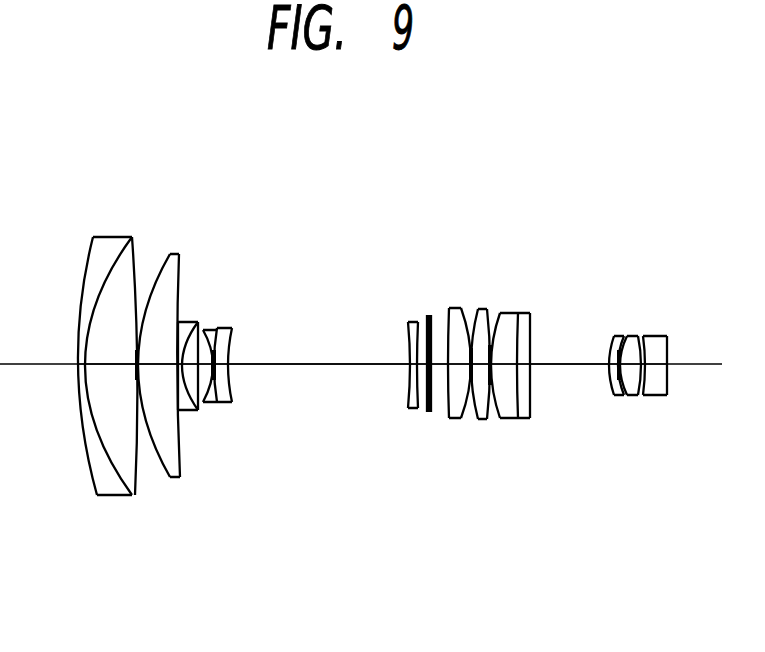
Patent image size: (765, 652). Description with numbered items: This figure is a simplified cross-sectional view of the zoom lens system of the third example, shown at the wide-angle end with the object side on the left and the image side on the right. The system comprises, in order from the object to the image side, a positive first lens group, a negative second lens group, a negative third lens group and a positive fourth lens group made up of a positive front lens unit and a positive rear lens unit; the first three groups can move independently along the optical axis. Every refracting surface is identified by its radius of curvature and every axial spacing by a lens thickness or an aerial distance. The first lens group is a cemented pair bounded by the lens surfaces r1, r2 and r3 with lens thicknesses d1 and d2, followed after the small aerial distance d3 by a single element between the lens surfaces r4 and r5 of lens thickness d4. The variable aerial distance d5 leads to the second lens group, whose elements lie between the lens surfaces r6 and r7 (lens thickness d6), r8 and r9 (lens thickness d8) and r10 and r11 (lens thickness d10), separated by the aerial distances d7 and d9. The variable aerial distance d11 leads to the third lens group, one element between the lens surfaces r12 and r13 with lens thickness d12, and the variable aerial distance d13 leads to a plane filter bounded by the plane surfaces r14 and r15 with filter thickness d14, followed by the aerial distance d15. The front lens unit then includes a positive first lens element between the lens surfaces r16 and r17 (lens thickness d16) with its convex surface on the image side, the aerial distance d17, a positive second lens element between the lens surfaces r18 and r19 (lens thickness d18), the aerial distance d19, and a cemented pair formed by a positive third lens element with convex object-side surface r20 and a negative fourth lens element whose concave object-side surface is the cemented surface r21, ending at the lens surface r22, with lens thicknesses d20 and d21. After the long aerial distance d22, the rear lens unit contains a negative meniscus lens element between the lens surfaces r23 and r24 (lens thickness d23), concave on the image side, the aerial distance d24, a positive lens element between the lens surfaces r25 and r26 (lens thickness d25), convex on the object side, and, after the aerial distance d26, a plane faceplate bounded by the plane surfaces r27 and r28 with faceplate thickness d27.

The first lens surface r1 is at (71, 300).
The second lens surface r2 is at (97, 325).
The third lens surface r3 is at (109, 300).
The fourth lens surface r4 is at (135, 316).
The fifth lens surface r5 is at (149, 291).
The sixth lens surface r6 is at (158, 282).
The seventh lens surface r7 is at (177, 257).
The eighth lens surface r8 is at (188, 282).
The ninth lens surface r9 is at (203, 253).
The tenth lens surface r10 is at (227, 278).
The eleventh lens surface r11 is at (242, 253).
The twelfth lens surface r12 is at (385, 245).
The thirteenth lens surface r13 is at (399, 268).
The fourteenth surface r14 is at (410, 291).
The fifteenth surface r15 is at (434, 247).
The sixteenth lens surface r16 is at (446, 272).
The seventeenth lens surface r17 is at (456, 294).
The eighteenth lens surface r18 is at (481, 250).
The nineteenth lens surface r19 is at (492, 272).
The twentieth lens surface r20 is at (502, 294).
The twenty-first lens surface r21 is at (527, 250).
The twenty-second lens surface r22 is at (537, 272).
The twenty-third lens surface r23 is at (615, 237).
The twenty-fourth lens surface r24 is at (626, 259).
The twenty-fifth lens surface r25 is at (639, 281).
The twenty-sixth lens surface r26 is at (661, 237).
The twenty-seventh surface r27 is at (669, 259).
The twenty-eighth surface r28 is at (686, 281).
The lens thickness d1 is at (61, 472).
The lens thickness d2 is at (97, 493).
The aerial distance d3 is at (109, 472).
The lens thickness d4 is at (136, 493).
The variable aerial distance d5 is at (146, 472).
The lens thickness d6 is at (158, 493).
The aerial distance d7 is at (175, 472).
The lens thickness d8 is at (192, 493).
The aerial distance d9 is at (204, 472).
The lens thickness d10 is at (225, 493).
The variable aerial distance d11 is at (318, 472).
The lens thickness d12 is at (389, 506).
The variable aerial distance d13 is at (402, 484).
The filter thickness d14 is at (409, 461).
The aerial distance d15 is at (431, 506).
The lens thickness d16 is at (447, 484).
The aerial distance d17 is at (452, 461).
The lens thickness d18 is at (479, 506).
The aerial distance d19 is at (489, 484).
The lens thickness d20 is at (499, 461).
The lens thickness d21 is at (522, 506).
The aerial distance d22 is at (563, 484).
The lens thickness d23 is at (613, 506).
The aerial distance d24 is at (627, 484).
The lens thickness d25 is at (638, 463).
The aerial distance d26 is at (662, 506).
The faceplate thickness d27 is at (669, 484).